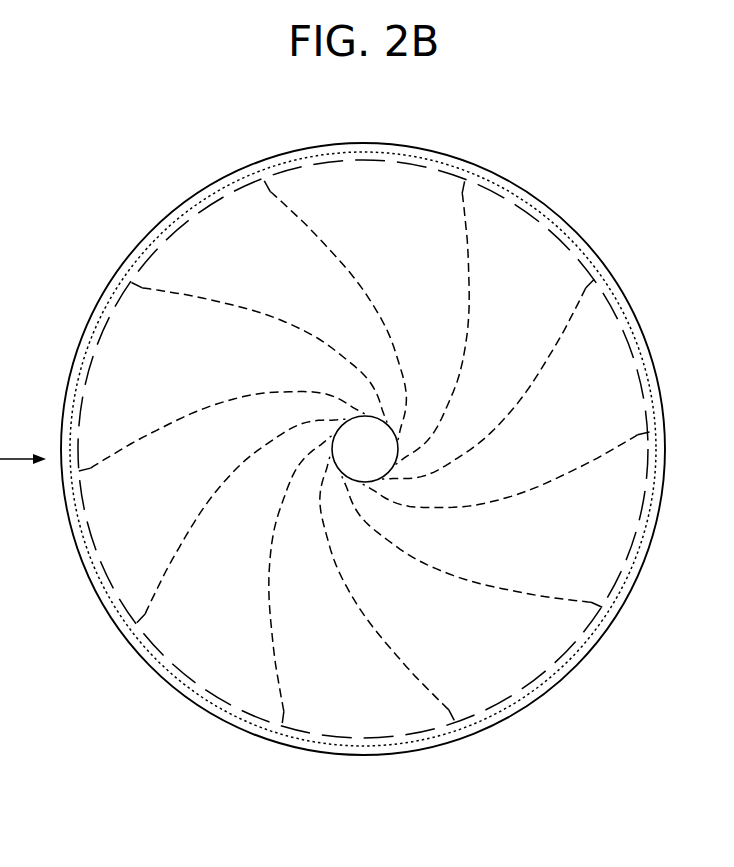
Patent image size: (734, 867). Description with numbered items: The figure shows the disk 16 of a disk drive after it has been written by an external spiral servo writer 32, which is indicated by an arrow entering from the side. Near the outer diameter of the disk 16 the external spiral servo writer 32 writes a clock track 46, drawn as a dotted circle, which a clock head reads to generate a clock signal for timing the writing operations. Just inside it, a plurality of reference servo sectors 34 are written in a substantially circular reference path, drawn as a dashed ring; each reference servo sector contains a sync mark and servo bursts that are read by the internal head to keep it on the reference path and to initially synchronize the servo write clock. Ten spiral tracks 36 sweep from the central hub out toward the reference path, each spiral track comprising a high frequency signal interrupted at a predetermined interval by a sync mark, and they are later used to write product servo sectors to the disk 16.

The disk 16 is at (560, 196).
The external spiral servo writer 32 is at (0, 169).
The reference servo sectors 34 is at (630, 569).
The clock track 46 is at (650, 538).
The spiral tracks 36 is at (370, 457).